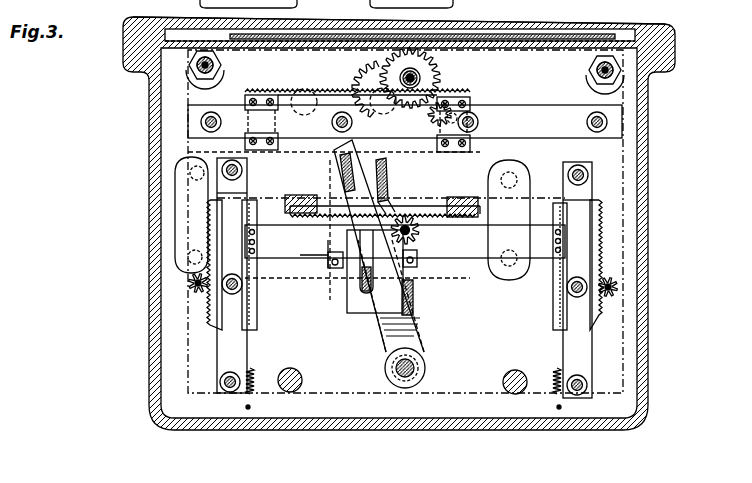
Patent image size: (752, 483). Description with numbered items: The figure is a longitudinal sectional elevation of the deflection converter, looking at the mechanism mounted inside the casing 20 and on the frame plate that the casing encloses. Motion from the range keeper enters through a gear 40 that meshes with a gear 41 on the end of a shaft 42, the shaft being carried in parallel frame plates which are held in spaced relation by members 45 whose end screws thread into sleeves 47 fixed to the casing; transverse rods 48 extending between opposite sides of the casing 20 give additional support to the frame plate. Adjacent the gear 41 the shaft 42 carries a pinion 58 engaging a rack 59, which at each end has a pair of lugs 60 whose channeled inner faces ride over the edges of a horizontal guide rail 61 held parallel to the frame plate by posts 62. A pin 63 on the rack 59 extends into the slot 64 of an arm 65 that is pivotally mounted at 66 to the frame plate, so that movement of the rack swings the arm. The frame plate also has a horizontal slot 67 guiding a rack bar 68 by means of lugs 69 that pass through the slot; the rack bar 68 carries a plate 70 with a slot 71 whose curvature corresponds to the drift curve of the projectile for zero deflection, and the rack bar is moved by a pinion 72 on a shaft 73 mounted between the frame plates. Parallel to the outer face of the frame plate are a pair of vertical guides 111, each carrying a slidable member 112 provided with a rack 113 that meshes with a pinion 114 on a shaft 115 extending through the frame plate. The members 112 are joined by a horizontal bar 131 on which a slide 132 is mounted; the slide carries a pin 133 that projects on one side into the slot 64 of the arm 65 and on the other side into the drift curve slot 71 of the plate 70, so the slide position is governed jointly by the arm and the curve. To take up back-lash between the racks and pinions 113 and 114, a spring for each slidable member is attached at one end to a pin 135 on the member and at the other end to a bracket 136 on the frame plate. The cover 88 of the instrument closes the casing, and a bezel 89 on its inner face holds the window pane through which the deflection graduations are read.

The casing 20 is at (650, 213).
The gear 40 is at (433, 120).
The gear 41 is at (374, 70).
The shaft 42 is at (404, 68).
The spacing member 45 is at (195, 76).
The sleeve 47 is at (197, 66).
The transverse rod 48 is at (300, 390).
The pinion 58 is at (420, 76).
The rack 59 is at (302, 88).
The lug 60 is at (485, 95).
The horizontal guide rail 61 is at (524, 105).
The post 62 is at (200, 122).
The pin 63 is at (343, 170).
The slot 64 is at (372, 188).
The arm 65 is at (417, 320).
The pivot 66 is at (414, 368).
The horizontal slot 67 is at (533, 195).
The rack bar 68 is at (436, 210).
The lug 69 is at (292, 200).
The plate 70 is at (392, 182).
The slot 71 is at (397, 197).
The pinion 72 is at (414, 233).
The shaft 73 is at (410, 240).
The cover 88 is at (652, 22).
The bezel 89 is at (600, 42).
The vertical guide 111 is at (222, 358).
The slidable member 112 is at (257, 322).
The rack 113 is at (207, 318).
The pinion 114 is at (190, 283).
The shaft 115 is at (192, 291).
The horizontal bar 131 is at (298, 262).
The slide 132 is at (345, 268).
The pin 133 is at (335, 240).
The pin 135 is at (253, 374).
The bracket 136 is at (248, 407).